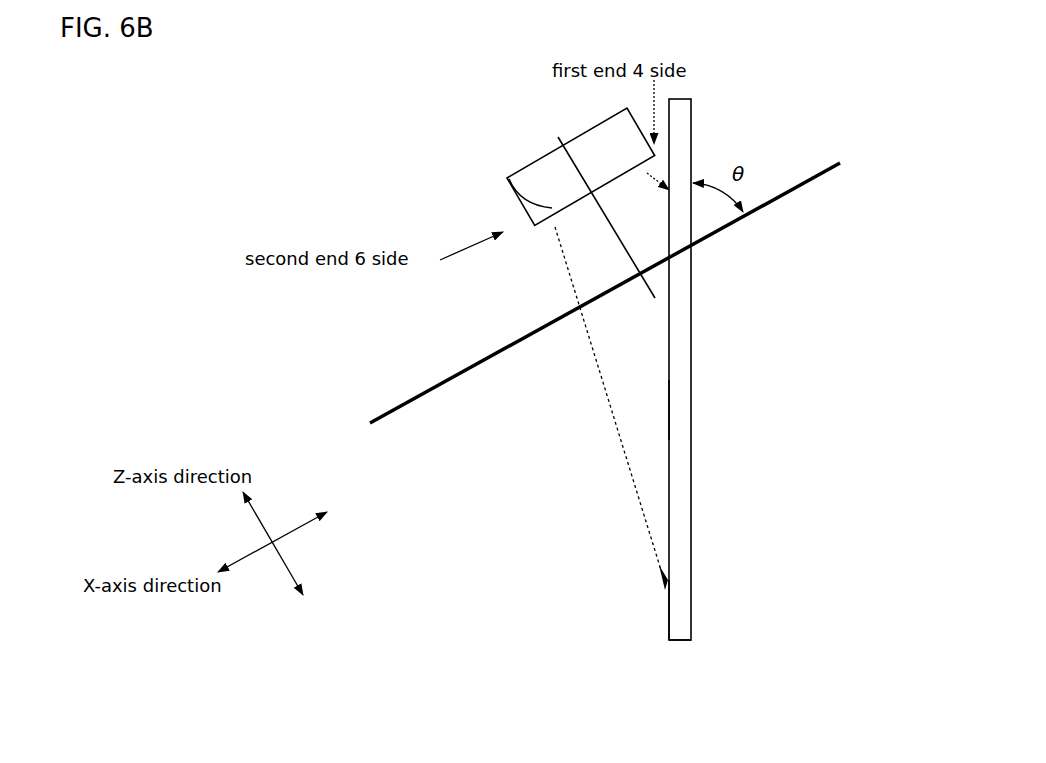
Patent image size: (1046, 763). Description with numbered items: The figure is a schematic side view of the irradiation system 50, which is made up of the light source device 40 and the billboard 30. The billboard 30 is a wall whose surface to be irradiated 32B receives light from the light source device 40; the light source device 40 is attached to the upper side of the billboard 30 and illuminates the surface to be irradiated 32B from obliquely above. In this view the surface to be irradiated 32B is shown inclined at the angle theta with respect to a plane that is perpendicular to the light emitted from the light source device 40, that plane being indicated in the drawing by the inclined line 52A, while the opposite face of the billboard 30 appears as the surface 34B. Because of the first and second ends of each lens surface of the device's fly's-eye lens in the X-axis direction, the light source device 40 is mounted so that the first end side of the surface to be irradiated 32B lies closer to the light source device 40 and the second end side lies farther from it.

The billboard 30 is at (677, 587).
The surface to be irradiated 32B is at (667, 607).
The first surface 34B is at (668, 408).
The light source device 40 is at (507, 177).
The irradiation system 50 is at (670, 654).
The inclined surface 52A is at (400, 400).